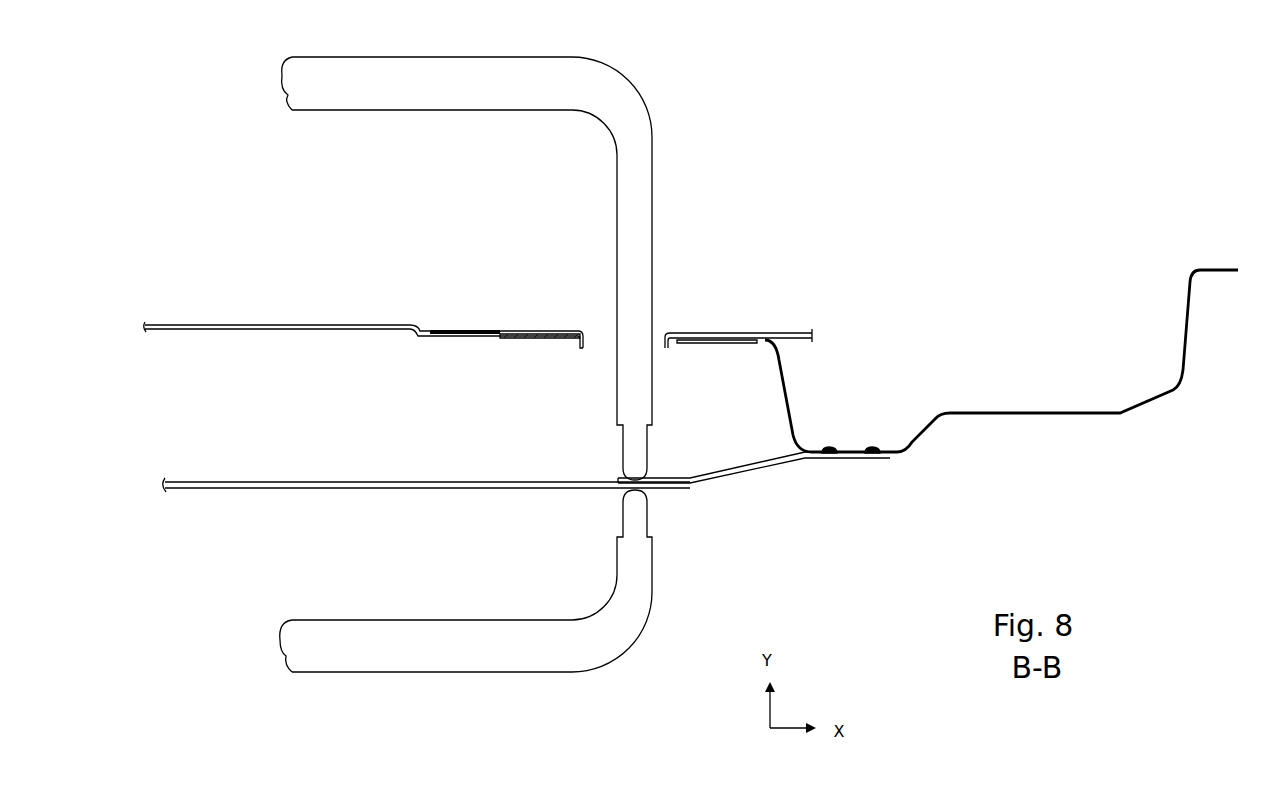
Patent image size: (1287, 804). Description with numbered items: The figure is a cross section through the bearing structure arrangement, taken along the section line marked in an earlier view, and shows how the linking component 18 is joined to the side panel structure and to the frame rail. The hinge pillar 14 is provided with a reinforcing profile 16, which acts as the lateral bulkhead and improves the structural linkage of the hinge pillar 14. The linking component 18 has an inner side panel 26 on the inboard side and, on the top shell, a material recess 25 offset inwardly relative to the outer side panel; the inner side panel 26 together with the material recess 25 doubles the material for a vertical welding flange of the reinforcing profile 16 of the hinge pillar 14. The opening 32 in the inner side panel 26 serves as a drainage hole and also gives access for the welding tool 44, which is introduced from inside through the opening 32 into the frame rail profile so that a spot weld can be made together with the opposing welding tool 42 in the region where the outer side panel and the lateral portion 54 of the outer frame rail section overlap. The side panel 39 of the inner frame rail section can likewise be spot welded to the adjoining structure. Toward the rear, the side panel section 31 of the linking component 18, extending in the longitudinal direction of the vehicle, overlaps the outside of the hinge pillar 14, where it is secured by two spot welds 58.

The hinge pillar 14 is at (993, 410).
The reinforcing profile 16 is at (790, 333).
The linking component 18 is at (721, 278).
The material recess 25 is at (697, 343).
The inner side panel 26 is at (518, 338).
The side panel section 31 is at (725, 480).
The opening 32 is at (586, 320).
The side panel of the inner frame rail section 39 is at (275, 325).
The welding tool 42 is at (503, 662).
The welding tool 44 is at (420, 100).
The lateral portion 54 is at (287, 482).
The spot welds 58 is at (830, 455).